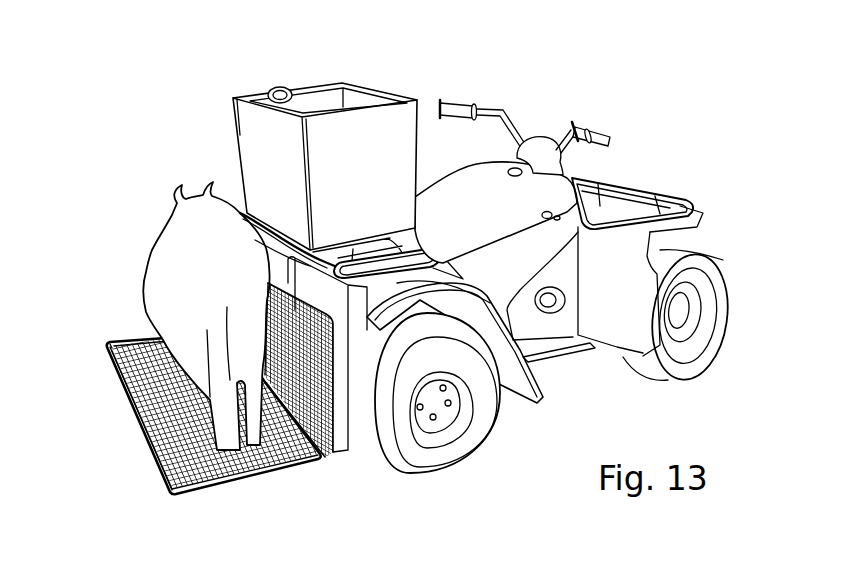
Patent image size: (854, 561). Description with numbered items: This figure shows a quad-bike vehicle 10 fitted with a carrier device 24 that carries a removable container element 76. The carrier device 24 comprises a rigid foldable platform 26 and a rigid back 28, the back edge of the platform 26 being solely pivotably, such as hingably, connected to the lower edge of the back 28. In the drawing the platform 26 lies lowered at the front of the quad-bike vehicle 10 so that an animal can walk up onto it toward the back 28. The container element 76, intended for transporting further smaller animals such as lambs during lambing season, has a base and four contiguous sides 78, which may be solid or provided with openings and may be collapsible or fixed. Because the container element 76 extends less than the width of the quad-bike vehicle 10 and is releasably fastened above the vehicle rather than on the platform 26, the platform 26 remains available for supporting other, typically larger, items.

The quad-bike vehicle 10 is at (678, 180).
The carrier device 24 is at (177, 400).
The rigid foldable platform 26 is at (147, 440).
The rigid back 28 is at (352, 425).
The removable container element 76 is at (376, 92).
The side 78 is at (329, 129).